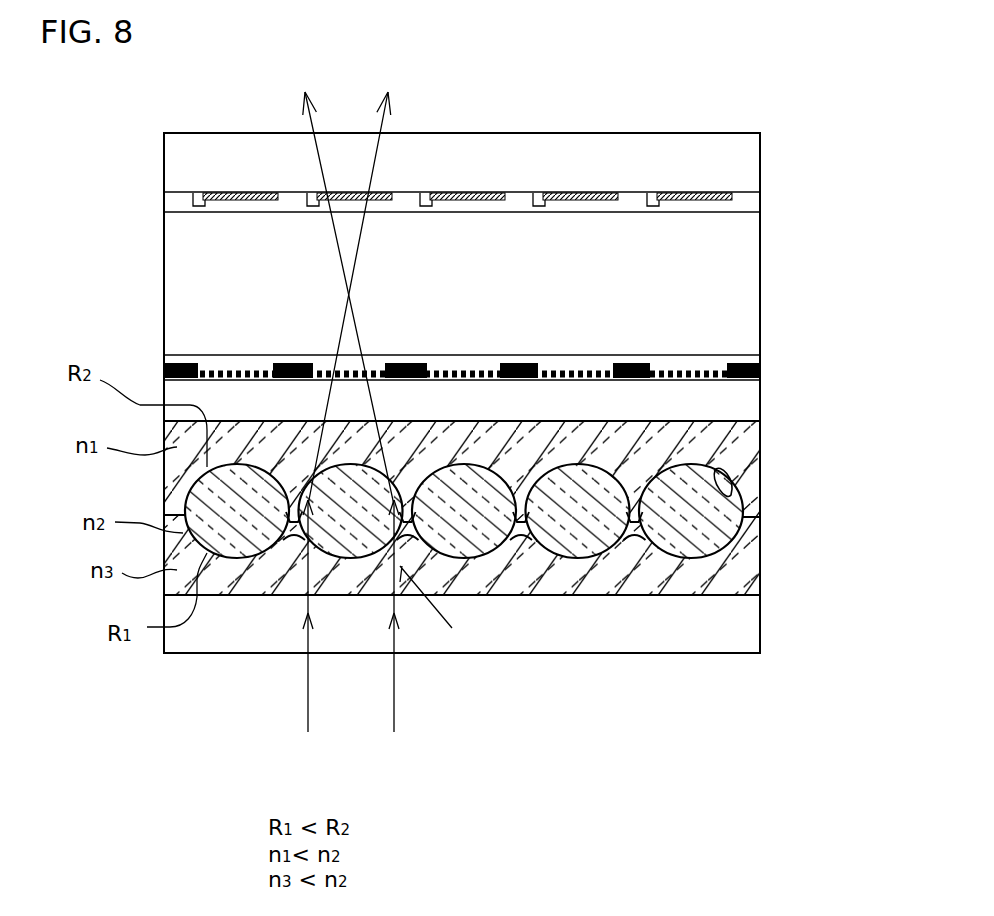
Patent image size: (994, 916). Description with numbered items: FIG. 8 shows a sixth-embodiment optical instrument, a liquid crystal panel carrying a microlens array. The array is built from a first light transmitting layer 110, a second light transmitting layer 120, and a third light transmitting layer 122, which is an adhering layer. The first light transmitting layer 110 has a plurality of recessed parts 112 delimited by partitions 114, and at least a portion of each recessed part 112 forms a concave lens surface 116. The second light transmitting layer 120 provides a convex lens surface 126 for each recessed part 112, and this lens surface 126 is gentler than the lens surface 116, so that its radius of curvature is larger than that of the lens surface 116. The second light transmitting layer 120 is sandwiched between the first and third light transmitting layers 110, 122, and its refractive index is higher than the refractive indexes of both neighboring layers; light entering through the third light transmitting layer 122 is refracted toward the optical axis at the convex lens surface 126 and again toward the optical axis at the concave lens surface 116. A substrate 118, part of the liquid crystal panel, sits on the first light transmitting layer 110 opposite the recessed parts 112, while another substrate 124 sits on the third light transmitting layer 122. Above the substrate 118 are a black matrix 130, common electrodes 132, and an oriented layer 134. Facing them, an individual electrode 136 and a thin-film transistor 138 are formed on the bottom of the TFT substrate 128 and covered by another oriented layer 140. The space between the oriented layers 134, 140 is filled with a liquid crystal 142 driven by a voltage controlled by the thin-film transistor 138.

The first light transmitting layer 110 is at (683, 462).
The recessed parts 112 is at (730, 484).
The partitions 114 is at (630, 540).
The lens surface 116 is at (700, 460).
The substrate 118 is at (745, 386).
The second light transmitting layer 120 is at (725, 512).
The third light transmitting layer 122 is at (748, 553).
The substrate 124 is at (742, 626).
The lens surface 126 is at (720, 592).
The substrate 128 is at (748, 163).
The black matrix 130 is at (760, 370).
The common electrodes 132 is at (760, 363).
The oriented layer 134 is at (690, 353).
The individual electrode 136 is at (763, 202).
The thin-film transistor 138 is at (651, 213).
The oriented layer 140 is at (716, 207).
The liquid crystal 142 is at (727, 282).